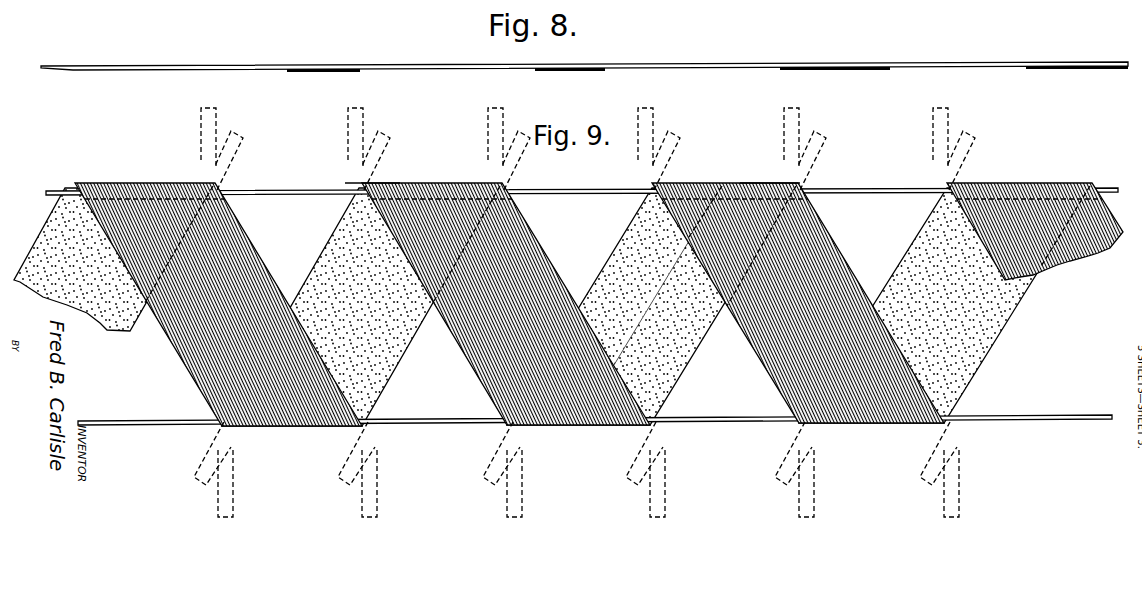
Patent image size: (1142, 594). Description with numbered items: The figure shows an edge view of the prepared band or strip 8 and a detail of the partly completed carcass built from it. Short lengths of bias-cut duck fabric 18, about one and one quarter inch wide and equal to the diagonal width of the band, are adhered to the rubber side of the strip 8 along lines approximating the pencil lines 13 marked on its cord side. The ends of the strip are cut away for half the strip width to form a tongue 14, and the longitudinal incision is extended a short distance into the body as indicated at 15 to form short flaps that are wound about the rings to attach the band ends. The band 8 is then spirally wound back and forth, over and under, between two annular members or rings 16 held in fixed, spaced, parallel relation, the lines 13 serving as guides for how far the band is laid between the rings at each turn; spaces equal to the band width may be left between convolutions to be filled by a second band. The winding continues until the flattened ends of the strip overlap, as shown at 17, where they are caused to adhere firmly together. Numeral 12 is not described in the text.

In FIG. 9, the band or strip 8 is at (185, 353).
In FIG. 8, the strip portion 12 is at (624, 14).
In FIG. 8, the pencil lines 13 is at (836, 14).
In FIG. 8, the tongue 14 is at (427, 67).
In FIG. 9, the tongue 14 is at (693, 348).
In FIG. 9, the short flaps 15 is at (418, 205).
In FIG. 9, the annular members or rings 16 is at (587, 194).
In FIG. 9, the overlap of band ends 17 is at (356, 187).
In FIG. 8, the duck fabric 18 is at (308, 74).
In FIG. 9, the duck fabric 18 is at (638, 198).